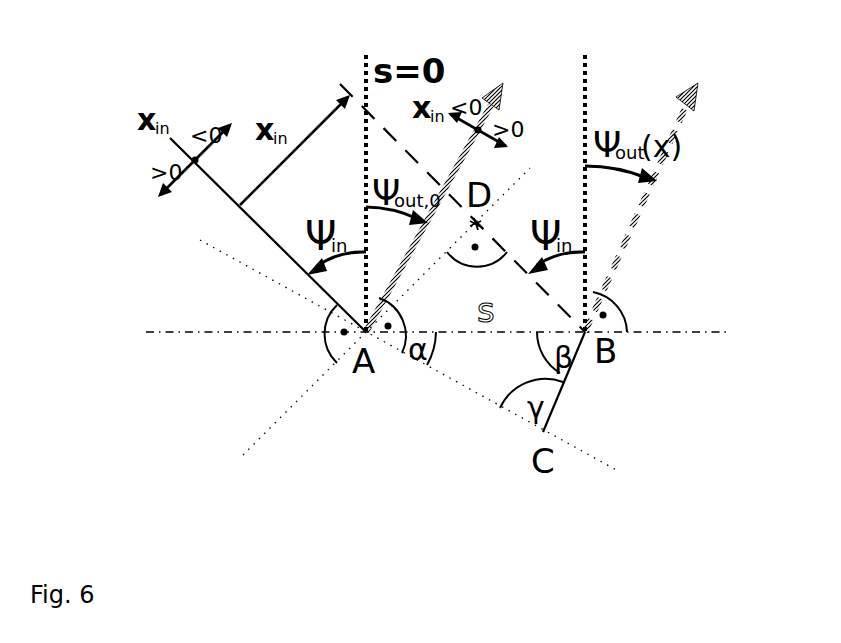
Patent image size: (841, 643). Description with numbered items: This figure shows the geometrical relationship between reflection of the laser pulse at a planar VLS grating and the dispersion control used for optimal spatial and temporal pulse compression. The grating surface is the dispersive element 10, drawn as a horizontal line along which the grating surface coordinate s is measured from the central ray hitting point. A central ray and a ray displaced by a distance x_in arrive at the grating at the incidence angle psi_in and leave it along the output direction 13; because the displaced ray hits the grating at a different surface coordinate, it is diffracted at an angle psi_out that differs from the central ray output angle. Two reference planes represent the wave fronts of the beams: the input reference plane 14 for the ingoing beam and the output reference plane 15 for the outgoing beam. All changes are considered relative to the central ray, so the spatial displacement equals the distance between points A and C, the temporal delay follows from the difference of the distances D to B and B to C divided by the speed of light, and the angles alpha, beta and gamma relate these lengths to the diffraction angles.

The dispersive element 10 is at (419, 335).
The output direction 13 is at (552, 186).
The input reference plane 14 is at (366, 334).
The output reference plane 15 is at (434, 375).